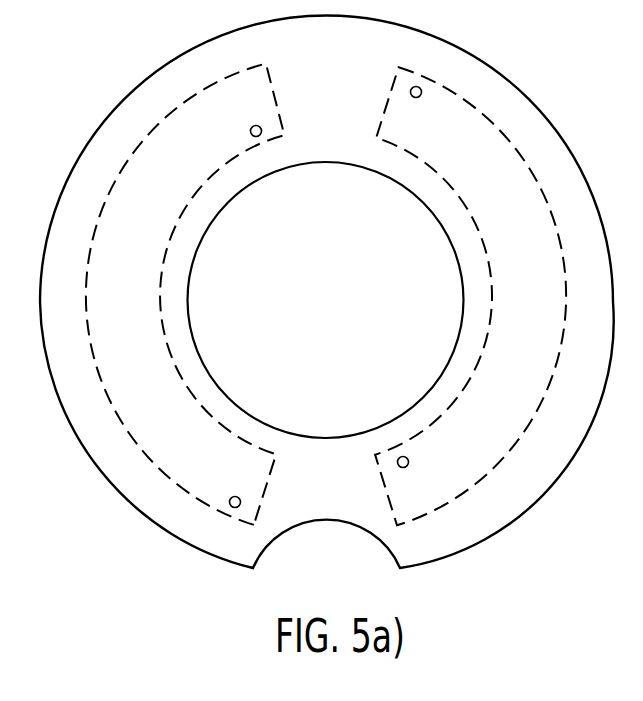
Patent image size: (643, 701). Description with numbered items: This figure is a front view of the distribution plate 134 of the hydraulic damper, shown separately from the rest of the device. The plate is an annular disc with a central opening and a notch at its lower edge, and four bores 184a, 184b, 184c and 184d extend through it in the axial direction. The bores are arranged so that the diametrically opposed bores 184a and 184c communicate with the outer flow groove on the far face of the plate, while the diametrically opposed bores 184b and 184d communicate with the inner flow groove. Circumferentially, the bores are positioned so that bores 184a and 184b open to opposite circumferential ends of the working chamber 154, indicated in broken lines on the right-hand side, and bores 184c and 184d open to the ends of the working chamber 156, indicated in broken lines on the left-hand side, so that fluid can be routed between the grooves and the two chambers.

The distribution plate 134 is at (482, 61).
The working chamber 156 is at (130, 311).
The working chamber 154 is at (548, 311).
The bore 184a is at (414, 97).
The bore 184b is at (402, 456).
The bore 184c is at (236, 496).
The bore 184d is at (258, 136).